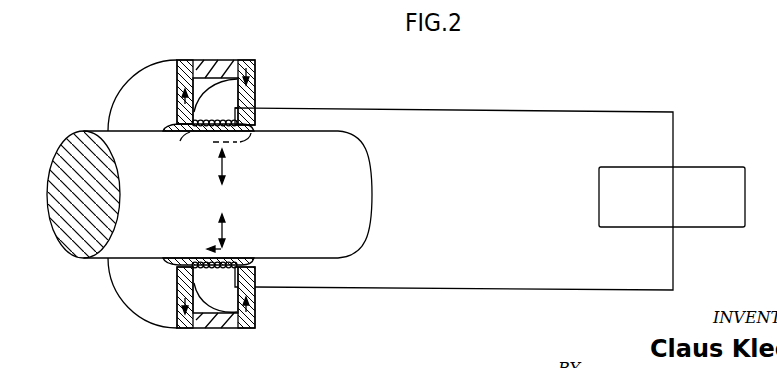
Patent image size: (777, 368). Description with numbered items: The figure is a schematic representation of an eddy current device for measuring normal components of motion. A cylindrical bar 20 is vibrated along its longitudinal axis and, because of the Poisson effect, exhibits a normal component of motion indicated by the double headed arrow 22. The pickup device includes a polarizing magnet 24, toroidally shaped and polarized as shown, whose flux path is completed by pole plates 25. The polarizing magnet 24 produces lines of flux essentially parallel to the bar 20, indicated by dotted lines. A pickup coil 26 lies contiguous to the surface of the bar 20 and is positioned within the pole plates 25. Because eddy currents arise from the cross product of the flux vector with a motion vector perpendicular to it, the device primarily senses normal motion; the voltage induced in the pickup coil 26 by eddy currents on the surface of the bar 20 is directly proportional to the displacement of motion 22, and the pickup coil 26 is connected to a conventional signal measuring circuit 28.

The cylindrical bar 20 is at (347, 197).
The double headed arrow 22 is at (224, 227).
The polarizing magnet 24 is at (208, 328).
The pole plates 25 is at (255, 63).
The pickup coil 26 is at (188, 136).
The signal measuring circuit 28 is at (599, 201).